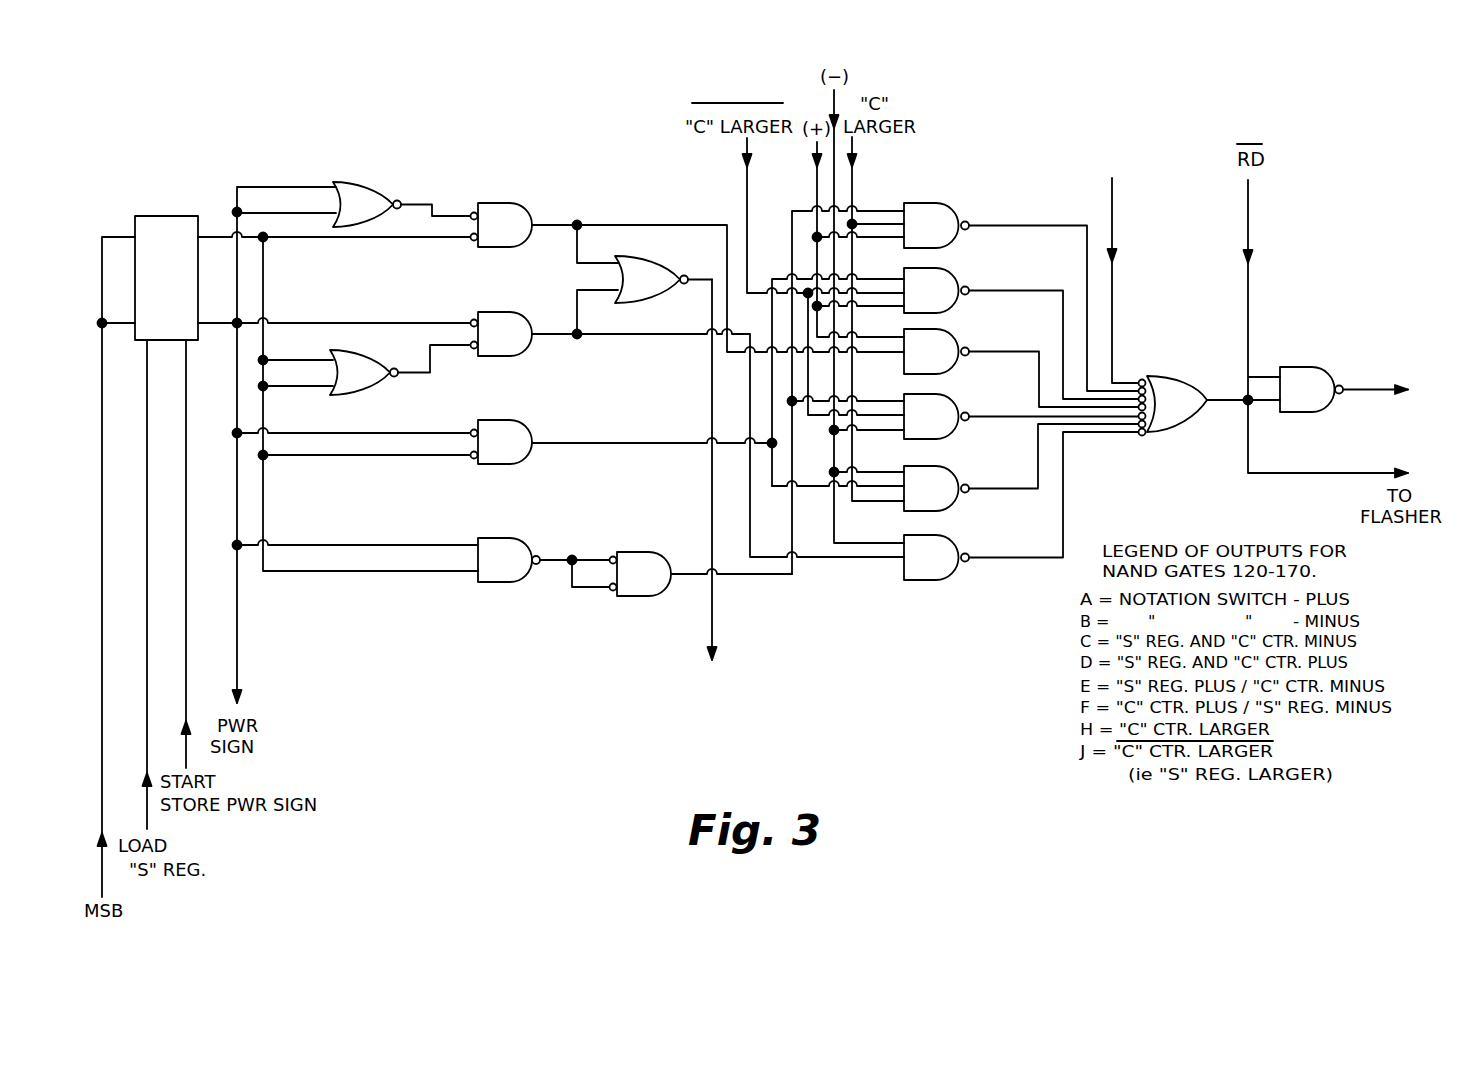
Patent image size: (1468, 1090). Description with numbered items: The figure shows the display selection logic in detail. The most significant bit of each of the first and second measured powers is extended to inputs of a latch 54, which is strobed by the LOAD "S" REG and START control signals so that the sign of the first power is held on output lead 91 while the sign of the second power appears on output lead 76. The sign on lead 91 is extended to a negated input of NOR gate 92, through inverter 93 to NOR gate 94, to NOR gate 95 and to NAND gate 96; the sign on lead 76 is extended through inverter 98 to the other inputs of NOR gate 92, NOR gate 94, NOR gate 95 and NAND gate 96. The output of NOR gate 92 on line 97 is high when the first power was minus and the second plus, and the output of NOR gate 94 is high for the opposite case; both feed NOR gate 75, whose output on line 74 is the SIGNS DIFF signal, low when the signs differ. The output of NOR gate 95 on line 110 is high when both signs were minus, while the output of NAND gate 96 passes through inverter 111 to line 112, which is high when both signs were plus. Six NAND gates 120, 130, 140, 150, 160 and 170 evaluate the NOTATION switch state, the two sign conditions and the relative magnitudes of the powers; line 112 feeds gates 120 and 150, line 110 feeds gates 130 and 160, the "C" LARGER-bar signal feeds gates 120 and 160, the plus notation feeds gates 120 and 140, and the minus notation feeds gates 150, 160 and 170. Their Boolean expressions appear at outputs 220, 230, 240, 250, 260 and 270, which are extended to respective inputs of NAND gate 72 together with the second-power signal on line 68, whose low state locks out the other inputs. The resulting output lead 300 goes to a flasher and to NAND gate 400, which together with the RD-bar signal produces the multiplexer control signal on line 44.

The latch 54 is at (157, 219).
The output lead 91 is at (222, 234).
The output lead 76 is at (233, 488).
The inverter 98 is at (388, 171).
The inverter 93 is at (383, 389).
The NOR gate 92 is at (497, 203).
The line 97 is at (555, 222).
The NOR gate 75 is at (664, 266).
The NOR gate 94 is at (517, 316).
The NOR gate 95 is at (530, 421).
The line 110 is at (632, 447).
The NAND gate 96 is at (500, 583).
The inverter 111 is at (632, 598).
The line 112 is at (690, 578).
The line 74 is at (714, 612).
The NAND gate 120 is at (938, 203).
The NAND gate 130 is at (958, 269).
The NAND gate 140 is at (952, 328).
The NAND gate 150 is at (952, 391).
The NAND gate 160 is at (952, 463).
The NAND gate 170 is at (955, 582).
The output line 220 is at (1042, 221).
The output line 230 is at (1049, 287).
The output line 240 is at (1026, 354).
The output line 250 is at (983, 420).
The output line 260 is at (1025, 490).
The output line 270 is at (1048, 555).
The line 68 is at (1114, 296).
The NAND gate 72 is at (1170, 378).
The output lead 300 is at (1227, 402).
The NAND gate 400 is at (1312, 365).
The line 44 is at (1369, 393).